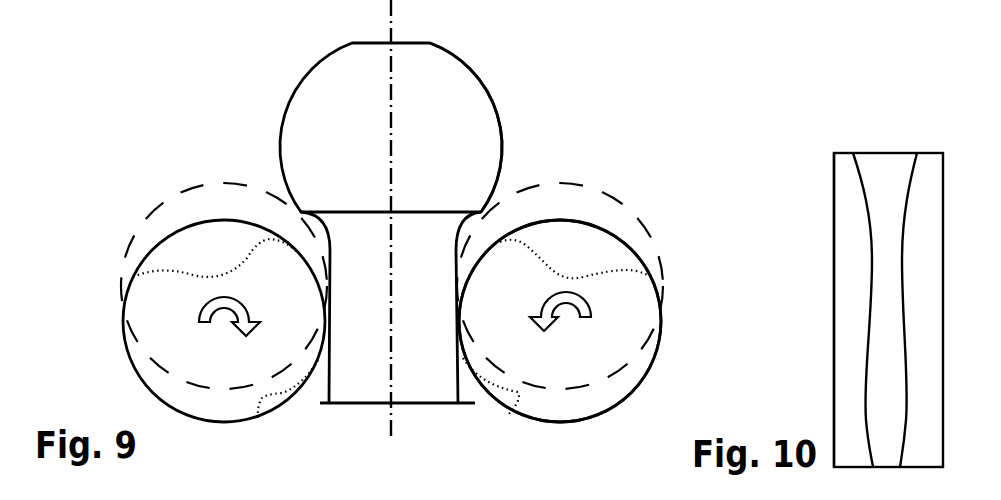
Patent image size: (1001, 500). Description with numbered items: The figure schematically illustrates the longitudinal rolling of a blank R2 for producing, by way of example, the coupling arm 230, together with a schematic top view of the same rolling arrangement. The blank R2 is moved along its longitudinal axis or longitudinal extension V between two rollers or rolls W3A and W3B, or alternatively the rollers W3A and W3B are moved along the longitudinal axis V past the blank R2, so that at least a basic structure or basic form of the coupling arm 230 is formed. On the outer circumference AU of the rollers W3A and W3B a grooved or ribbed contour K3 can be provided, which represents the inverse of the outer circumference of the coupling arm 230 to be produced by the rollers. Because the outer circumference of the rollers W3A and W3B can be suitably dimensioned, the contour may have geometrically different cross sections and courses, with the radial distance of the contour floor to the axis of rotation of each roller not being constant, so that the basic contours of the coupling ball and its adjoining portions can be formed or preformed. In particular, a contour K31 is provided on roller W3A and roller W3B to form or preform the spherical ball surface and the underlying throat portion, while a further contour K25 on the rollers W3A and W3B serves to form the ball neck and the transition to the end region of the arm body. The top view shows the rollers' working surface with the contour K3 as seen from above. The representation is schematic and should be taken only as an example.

In FIG. 9, the coupling arm 230 is at (284, 119).
In FIG. 9, the blank R2 is at (483, 119).
In FIG. 9, the longitudinal axis V is at (392, 28).
In FIG. 9, the roller W3A is at (120, 317).
In FIG. 9, the roller W3B is at (663, 312).
In FIG. 10, the roller W3B is at (843, 153).
In FIG. 9, the contour K31 is at (250, 260).
In FIG. 9, the further contour K25 is at (288, 400).
In FIG. 9, the outer circumference AU is at (653, 368).
In FIG. 10, the outer circumference AU is at (842, 232).
In FIG. 10, the contour K3 is at (863, 182).